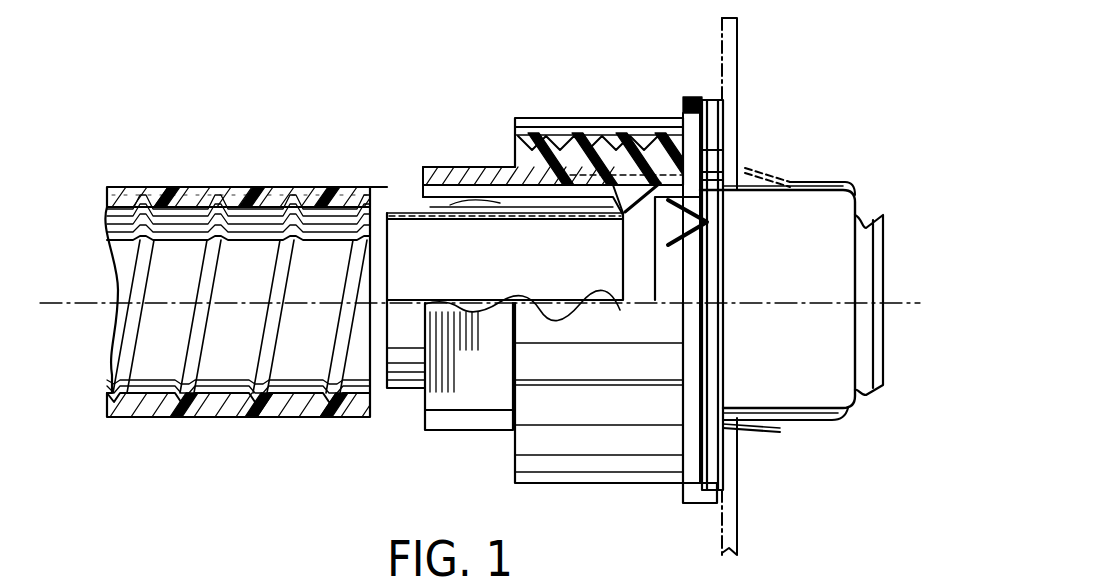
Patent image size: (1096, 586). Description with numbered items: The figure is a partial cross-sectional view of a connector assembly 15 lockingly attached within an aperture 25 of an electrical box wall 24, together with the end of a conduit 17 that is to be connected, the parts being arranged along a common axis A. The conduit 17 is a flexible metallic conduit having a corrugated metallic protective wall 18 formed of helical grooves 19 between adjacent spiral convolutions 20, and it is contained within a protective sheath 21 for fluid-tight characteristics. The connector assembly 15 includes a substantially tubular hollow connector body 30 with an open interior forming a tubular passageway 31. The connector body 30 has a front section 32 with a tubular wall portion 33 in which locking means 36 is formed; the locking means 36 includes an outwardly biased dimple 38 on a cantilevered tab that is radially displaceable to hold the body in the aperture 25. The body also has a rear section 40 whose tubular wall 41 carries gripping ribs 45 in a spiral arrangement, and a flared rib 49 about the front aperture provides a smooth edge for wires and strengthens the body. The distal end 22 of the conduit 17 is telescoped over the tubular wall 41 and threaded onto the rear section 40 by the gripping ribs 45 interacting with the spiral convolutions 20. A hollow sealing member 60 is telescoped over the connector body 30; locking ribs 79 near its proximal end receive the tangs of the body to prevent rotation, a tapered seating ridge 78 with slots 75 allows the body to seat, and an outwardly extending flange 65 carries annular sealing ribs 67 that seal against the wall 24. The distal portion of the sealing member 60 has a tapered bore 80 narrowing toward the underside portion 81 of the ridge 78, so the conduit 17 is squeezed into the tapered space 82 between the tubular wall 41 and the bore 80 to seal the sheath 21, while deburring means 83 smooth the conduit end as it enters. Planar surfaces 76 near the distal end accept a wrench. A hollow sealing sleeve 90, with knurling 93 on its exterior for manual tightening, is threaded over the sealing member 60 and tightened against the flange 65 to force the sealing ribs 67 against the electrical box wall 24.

The axis of hose A is at (78, 300).
The connector assembly 15 is at (504, 100).
The conduit 17 is at (211, 181).
The corrugated metallic protective wall 18 is at (261, 210).
The helical grooves 19 is at (192, 365).
The spiral convolutions 20 is at (293, 370).
The protective sheath 21 is at (337, 190).
The distal end 22 is at (373, 187).
The electrical box wall 24 is at (745, 33).
The aperture 25 is at (726, 194).
The connector body 30 is at (865, 176).
The tubular passageway 31 is at (396, 223).
The front section 32 is at (821, 176).
The tubular wall portion 33 is at (795, 393).
The locking means 36 is at (778, 436).
The dimple 38 is at (755, 170).
The rear section 40 is at (411, 403).
The tubular wall 41 is at (490, 187).
The gripping ribs 45 is at (462, 226).
The flared rib 49 is at (876, 408).
The sealing member 60 is at (489, 152).
The flange 65 is at (705, 150).
The annular sealing ribs 67 is at (708, 128).
The slots 75 is at (628, 218).
The planar surfaces 76 is at (465, 395).
The seating ridge 78 is at (637, 215).
The locking ribs 79 is at (634, 133).
The bore 80 is at (500, 207).
The underside portion 81 is at (557, 202).
The tapered space 82 is at (560, 203).
The deburring means 83 is at (436, 195).
The sealing sleeve 90 is at (617, 100).
The knurling 93 is at (551, 118).